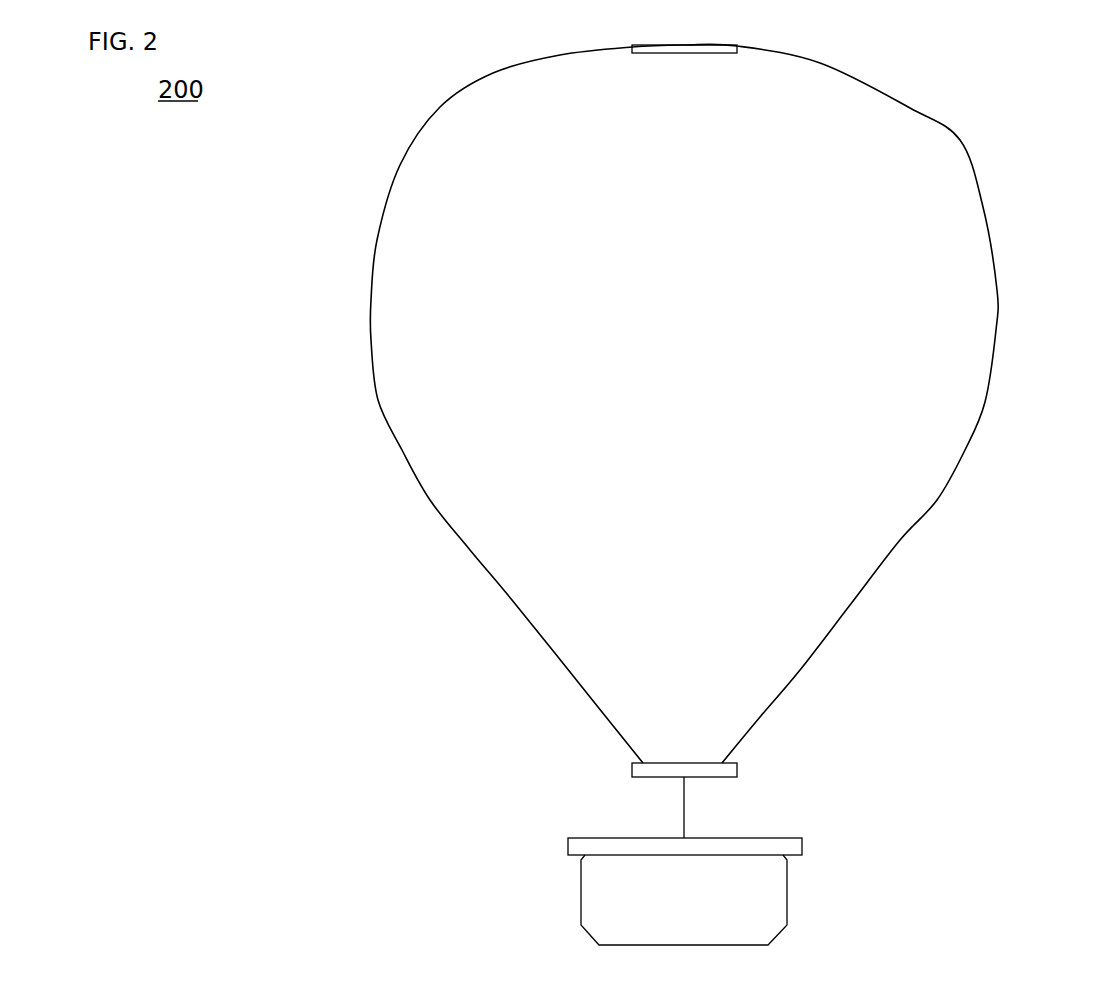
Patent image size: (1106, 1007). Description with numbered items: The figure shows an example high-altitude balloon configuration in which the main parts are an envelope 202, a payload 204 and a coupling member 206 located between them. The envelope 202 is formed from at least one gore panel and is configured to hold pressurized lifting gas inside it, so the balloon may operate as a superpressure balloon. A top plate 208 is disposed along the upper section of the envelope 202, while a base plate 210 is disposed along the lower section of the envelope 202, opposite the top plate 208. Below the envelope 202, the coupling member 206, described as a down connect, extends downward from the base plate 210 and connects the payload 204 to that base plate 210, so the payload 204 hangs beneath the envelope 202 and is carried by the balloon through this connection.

The envelope 202 is at (985, 402).
The payload 204 is at (788, 895).
The coupling member 206 is at (685, 808).
The top plate 208 is at (737, 45).
The base plate 210 is at (737, 763).